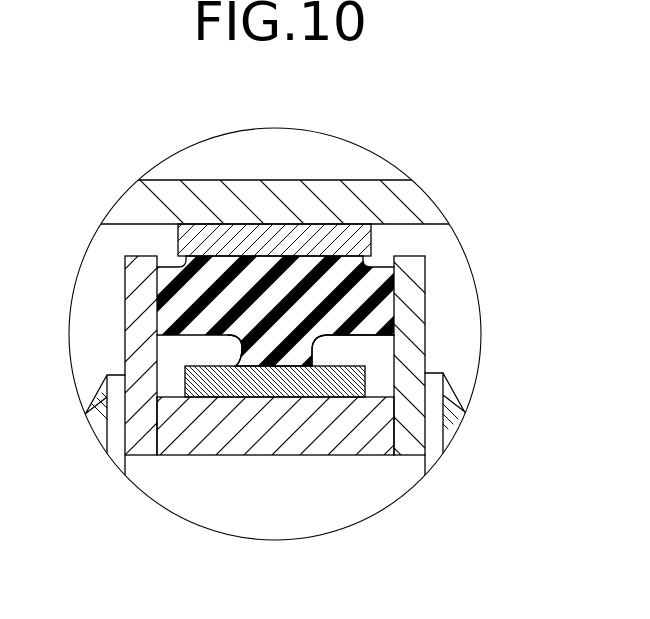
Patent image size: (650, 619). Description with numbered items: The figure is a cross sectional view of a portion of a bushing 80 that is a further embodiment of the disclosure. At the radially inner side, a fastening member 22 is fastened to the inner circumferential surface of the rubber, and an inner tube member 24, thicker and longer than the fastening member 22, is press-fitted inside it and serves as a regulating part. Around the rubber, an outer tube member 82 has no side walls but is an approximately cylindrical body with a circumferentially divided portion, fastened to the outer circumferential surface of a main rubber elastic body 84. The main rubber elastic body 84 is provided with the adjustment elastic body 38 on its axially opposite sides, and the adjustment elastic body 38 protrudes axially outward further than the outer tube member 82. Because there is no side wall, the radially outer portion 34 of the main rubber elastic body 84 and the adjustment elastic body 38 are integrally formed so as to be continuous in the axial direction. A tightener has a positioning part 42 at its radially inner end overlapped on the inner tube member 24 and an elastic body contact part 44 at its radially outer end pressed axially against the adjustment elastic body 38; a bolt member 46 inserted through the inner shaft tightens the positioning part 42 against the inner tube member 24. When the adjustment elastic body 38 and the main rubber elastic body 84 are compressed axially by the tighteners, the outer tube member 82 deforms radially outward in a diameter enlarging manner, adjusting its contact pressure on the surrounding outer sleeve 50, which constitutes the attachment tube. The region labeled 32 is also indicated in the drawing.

The fastening member 22 is at (236, 385).
The inner tube member 24 is at (267, 437).
The lower seal surface 32 is at (292, 353).
The radially outer portion 34 is at (222, 312).
The adjustment elastic body 38 is at (172, 287).
The positioning part 42 is at (142, 420).
The elastic body contact part 44 is at (142, 293).
The bolt member 46 is at (388, 482).
The outer sleeve 50 is at (347, 177).
The bushing 80 is at (438, 312).
The outer tube member 82 is at (279, 243).
The main rubber elastic body 84 is at (362, 342).